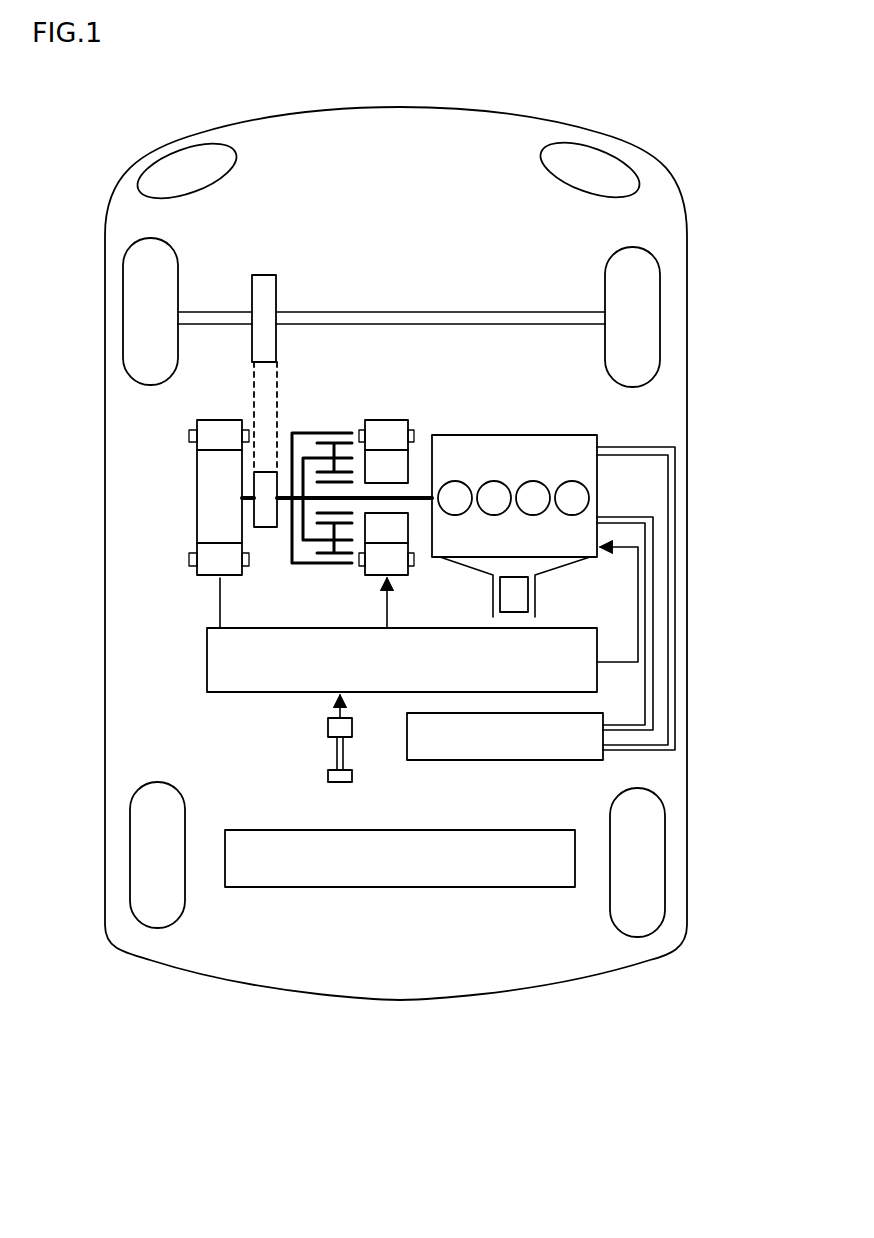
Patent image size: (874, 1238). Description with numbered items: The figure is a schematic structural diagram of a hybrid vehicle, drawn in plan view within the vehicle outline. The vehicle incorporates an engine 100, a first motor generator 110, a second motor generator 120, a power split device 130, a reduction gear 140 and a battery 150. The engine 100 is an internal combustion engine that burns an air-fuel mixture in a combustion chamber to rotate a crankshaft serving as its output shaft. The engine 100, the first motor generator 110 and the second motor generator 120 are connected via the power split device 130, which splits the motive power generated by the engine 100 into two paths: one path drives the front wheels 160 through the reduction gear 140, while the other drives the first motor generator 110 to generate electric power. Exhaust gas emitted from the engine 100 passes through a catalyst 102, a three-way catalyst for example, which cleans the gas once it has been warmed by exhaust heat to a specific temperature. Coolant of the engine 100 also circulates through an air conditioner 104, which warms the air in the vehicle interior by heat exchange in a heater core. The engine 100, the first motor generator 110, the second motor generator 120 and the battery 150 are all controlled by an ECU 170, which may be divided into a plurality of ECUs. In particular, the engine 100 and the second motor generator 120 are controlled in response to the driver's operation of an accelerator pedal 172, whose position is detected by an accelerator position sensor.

The engine 100 is at (465, 433).
The catalyst 102 is at (528, 597).
The air conditioner 104 is at (552, 762).
The first motor generator 110 is at (390, 420).
The second motor generator 120 is at (197, 492).
The power split device 130 is at (320, 433).
The reduction gear 140 is at (265, 259).
The battery 150 is at (370, 887).
The front wheels 160 is at (123, 322).
The ECU 170 is at (207, 655).
The accelerator pedal 172 is at (328, 727).